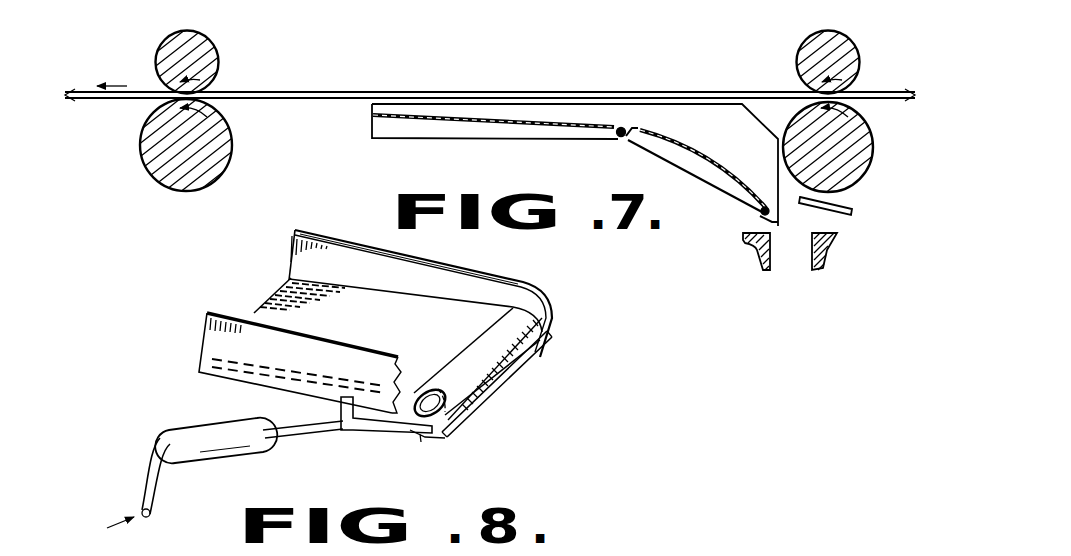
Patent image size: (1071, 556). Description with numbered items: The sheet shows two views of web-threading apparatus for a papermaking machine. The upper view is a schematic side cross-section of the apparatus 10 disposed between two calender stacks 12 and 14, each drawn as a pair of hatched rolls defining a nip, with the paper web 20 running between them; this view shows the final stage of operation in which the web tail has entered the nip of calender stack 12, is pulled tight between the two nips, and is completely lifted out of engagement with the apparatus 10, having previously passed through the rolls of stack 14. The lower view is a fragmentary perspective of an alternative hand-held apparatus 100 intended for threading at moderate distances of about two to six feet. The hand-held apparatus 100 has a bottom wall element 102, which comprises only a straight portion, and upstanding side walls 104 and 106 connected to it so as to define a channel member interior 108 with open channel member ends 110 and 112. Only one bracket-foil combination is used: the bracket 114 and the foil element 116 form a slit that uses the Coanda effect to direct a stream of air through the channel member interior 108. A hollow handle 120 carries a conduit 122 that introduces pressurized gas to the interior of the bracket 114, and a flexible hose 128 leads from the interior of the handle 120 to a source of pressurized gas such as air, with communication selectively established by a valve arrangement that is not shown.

In FIG. 7, the apparatus 10 is at (578, 100).
In FIG. 7, the calender stack 12 is at (142, 62).
In FIG. 7, the calender stack 14 is at (868, 75).
In FIG. 7, the paper web 20 is at (118, 100).
In FIG. 8, the hand-held apparatus 100 is at (530, 281).
In FIG. 8, the bottom wall element 102 is at (306, 282).
In FIG. 8, the side wall 104 is at (201, 347).
In FIG. 8, the side wall 106 is at (331, 251).
In FIG. 8, the channel member interior 108 is at (415, 305).
In FIG. 8, the open channel member end 110 is at (262, 303).
In FIG. 8, the open channel member end 112 is at (540, 318).
In FIG. 8, the bracket 114 is at (432, 428).
In FIG. 8, the foil element 116 is at (492, 372).
In FIG. 8, the hollow handle 120 is at (205, 455).
In FIG. 8, the conduit 122 is at (347, 432).
In FIG. 8, the flexible hose 128 is at (150, 482).